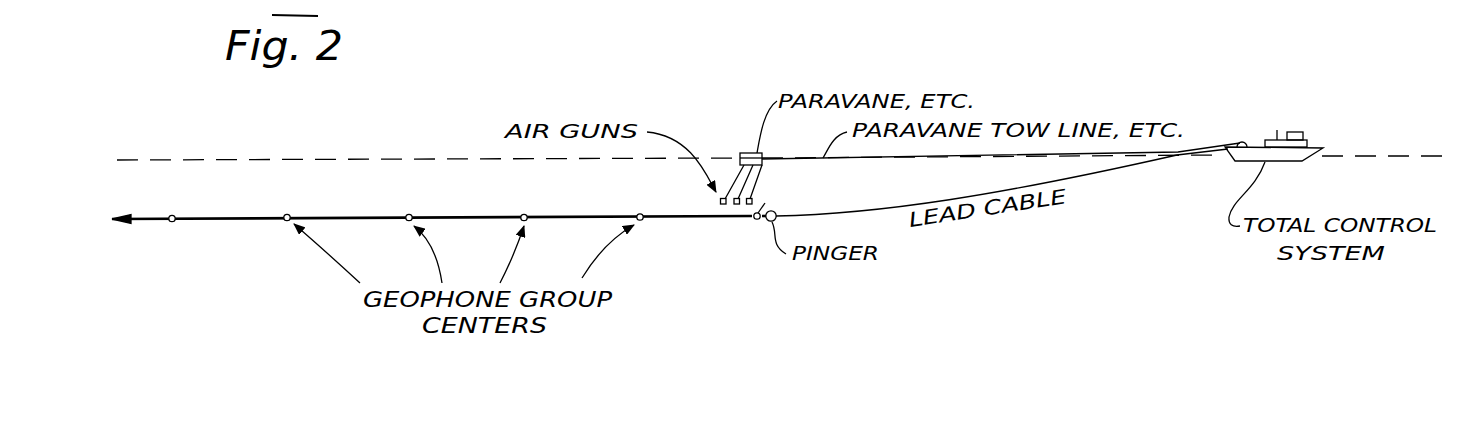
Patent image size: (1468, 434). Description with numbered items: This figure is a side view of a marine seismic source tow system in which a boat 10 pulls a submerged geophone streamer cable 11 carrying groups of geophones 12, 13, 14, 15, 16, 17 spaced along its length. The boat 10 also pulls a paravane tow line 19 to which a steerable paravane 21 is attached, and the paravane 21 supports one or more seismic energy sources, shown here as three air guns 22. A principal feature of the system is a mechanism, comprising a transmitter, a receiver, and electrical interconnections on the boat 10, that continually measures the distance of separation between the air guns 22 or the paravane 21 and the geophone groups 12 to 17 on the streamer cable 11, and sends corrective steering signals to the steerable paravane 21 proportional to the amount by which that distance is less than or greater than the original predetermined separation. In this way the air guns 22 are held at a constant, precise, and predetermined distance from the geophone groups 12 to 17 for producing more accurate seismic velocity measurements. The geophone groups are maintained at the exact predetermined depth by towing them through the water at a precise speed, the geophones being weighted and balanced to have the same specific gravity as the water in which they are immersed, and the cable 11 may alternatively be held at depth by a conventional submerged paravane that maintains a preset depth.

The boat 10 is at (1253, 142).
The geophone streamer cable 11 is at (1097, 183).
The geophone group 12 is at (756, 219).
The geophone group 13 is at (642, 222).
The geophone group 14 is at (519, 222).
The geophone group 15 is at (405, 222).
The geophone group 16 is at (283, 222).
The geophone group 17 is at (169, 222).
The paravane tow line 19 is at (848, 163).
The steerable paravane 21 is at (738, 153).
The air gun 22 is at (720, 206).